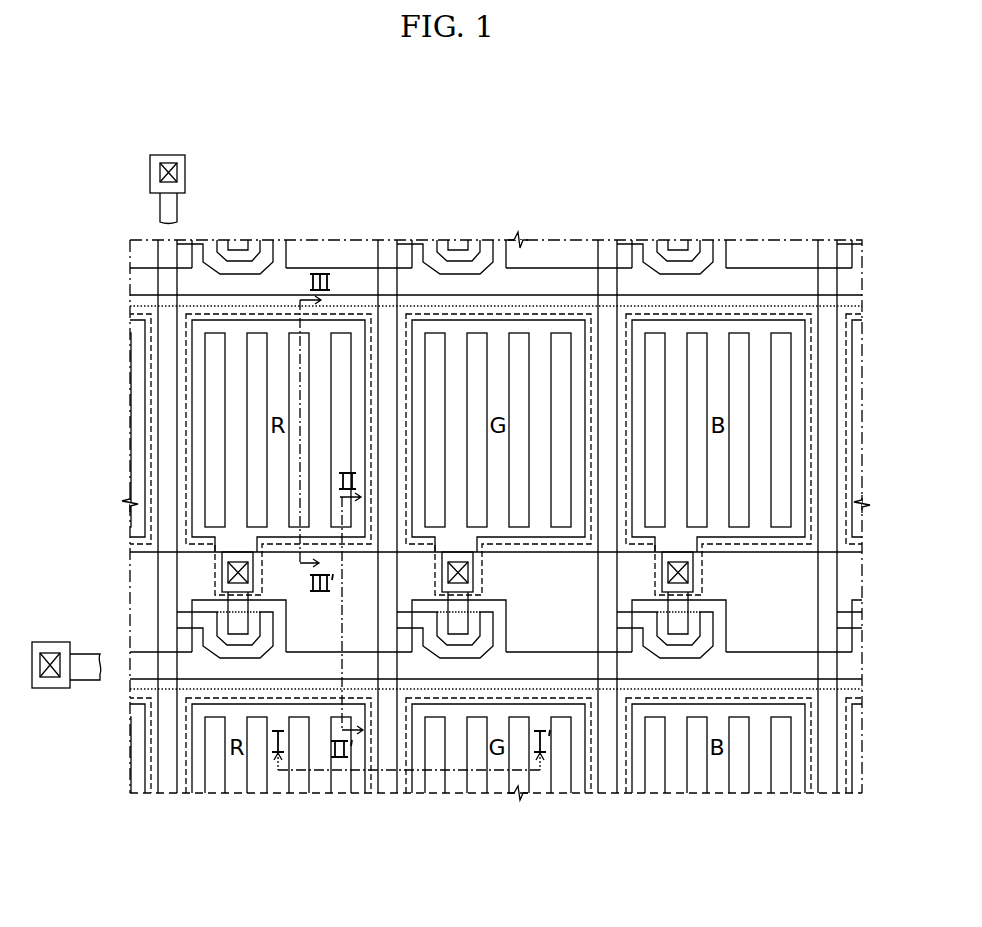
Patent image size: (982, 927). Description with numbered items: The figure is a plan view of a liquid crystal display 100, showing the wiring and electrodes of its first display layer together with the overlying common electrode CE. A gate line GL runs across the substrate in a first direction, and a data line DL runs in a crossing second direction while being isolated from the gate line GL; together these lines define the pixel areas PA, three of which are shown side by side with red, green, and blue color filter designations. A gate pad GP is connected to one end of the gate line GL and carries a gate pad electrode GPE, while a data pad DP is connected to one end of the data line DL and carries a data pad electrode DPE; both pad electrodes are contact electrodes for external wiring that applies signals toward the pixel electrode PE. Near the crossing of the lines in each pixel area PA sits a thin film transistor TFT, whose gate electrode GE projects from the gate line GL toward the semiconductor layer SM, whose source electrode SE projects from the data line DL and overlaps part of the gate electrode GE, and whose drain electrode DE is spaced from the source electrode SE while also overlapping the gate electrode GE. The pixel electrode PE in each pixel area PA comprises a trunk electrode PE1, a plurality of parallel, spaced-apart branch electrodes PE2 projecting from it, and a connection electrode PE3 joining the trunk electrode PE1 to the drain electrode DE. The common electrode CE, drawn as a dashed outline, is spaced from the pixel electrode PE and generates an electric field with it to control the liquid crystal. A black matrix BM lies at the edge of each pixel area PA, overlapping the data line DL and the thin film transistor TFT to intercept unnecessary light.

The liquid crystal display 100 is at (693, 173).
The data pad DP is at (180, 158).
The data pad electrode DPE is at (168, 163).
The gate pad GP is at (52, 652).
The gate pad electrode GPE is at (52, 678).
The pixel area PA is at (369, 300).
The pixel electrode PE is at (215, 397).
The trunk electrode PE1 is at (277, 330).
The branch electrode PE2 is at (195, 456).
The connection electrode PE3 is at (233, 546).
The common electrode CE is at (185, 316).
The data line DL is at (160, 427).
The gate line GL is at (137, 681).
The thin film transistor TFT is at (214, 733).
The semiconductor layer SM is at (222, 598).
The gate electrode GE is at (192, 604).
The source electrode SE is at (209, 627).
The drain electrode DE is at (252, 573).
The black matrix BM is at (417, 792).